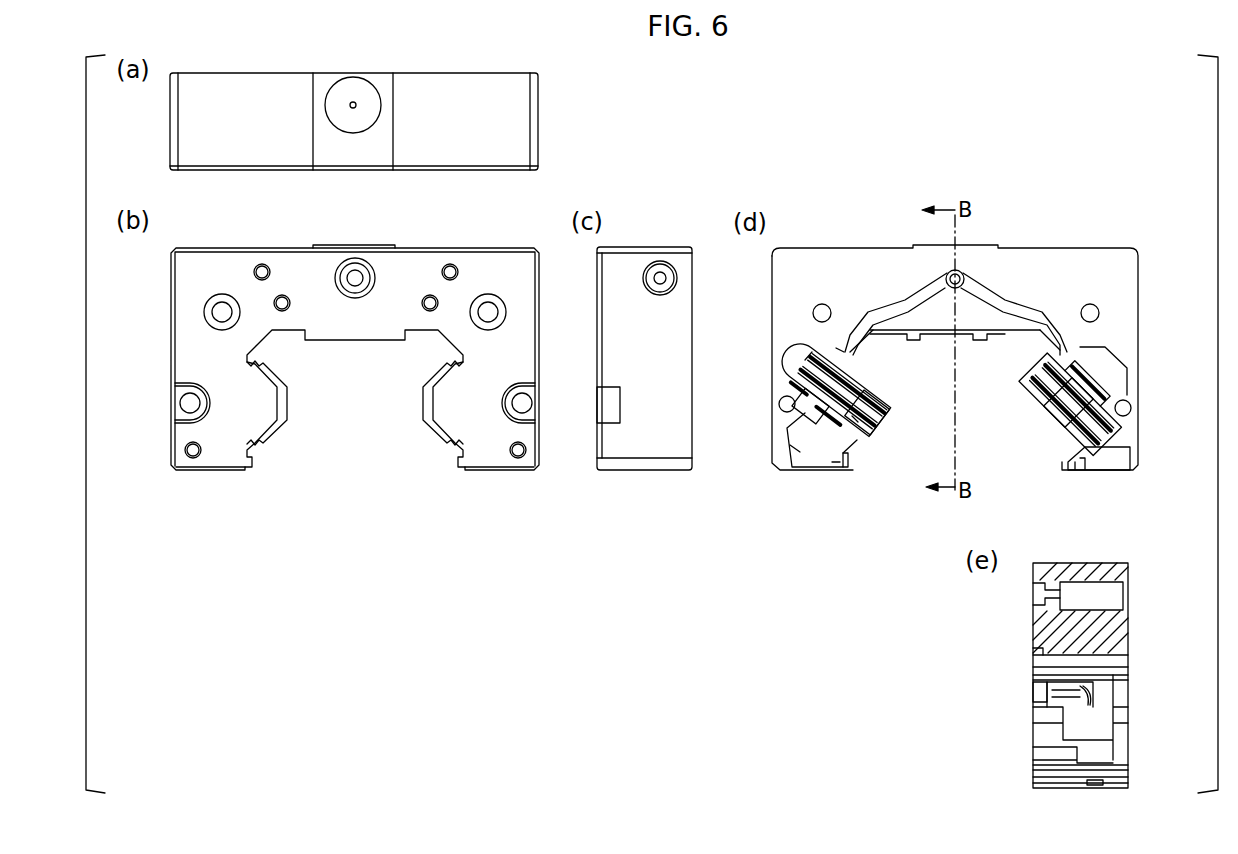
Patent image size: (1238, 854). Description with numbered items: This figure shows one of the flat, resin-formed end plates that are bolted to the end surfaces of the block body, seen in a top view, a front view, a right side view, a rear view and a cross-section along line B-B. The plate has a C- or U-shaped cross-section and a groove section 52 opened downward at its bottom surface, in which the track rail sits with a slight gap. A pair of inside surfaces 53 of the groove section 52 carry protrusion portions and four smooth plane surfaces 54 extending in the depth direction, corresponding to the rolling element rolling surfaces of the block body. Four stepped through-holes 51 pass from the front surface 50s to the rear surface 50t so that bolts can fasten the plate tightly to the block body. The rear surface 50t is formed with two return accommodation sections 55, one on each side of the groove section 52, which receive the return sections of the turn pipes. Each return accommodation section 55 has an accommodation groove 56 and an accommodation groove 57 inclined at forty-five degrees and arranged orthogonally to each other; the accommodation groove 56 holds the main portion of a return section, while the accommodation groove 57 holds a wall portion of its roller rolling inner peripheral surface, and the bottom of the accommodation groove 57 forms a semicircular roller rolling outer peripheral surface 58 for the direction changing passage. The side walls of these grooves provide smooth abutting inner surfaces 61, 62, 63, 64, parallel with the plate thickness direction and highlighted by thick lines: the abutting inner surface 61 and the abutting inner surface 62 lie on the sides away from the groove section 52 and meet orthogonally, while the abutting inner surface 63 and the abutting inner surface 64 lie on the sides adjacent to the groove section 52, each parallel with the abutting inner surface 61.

The front surface 50s is at (228, 456).
The rear surface 50t is at (821, 262).
The stepped through-hole 51 is at (528, 410).
The groove section 52 is at (936, 430).
The inside surface 53 is at (1014, 404).
The plane surface 54 is at (1030, 437).
The return accommodation section 55 is at (1085, 395).
The accommodation groove 56 is at (1122, 350).
The accommodation groove 57 is at (1108, 422).
The roller rolling outer peripheral surface 58 is at (1102, 440).
The abutting inner surface 61 is at (1128, 388).
The abutting inner surface 62 is at (1130, 412).
The abutting inner surface 63 is at (1078, 345).
The abutting inner surface 64 is at (1074, 462).